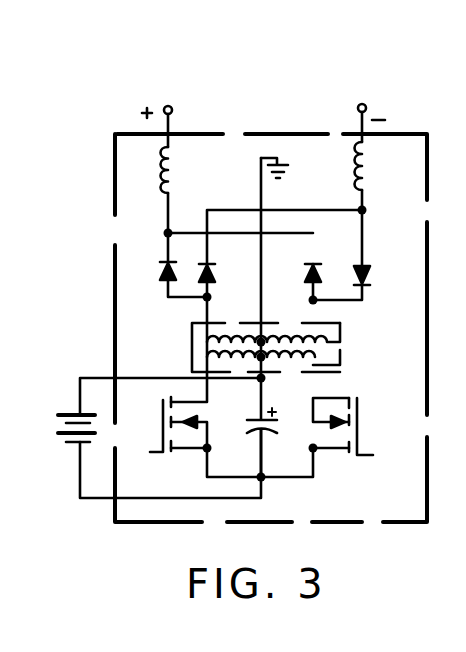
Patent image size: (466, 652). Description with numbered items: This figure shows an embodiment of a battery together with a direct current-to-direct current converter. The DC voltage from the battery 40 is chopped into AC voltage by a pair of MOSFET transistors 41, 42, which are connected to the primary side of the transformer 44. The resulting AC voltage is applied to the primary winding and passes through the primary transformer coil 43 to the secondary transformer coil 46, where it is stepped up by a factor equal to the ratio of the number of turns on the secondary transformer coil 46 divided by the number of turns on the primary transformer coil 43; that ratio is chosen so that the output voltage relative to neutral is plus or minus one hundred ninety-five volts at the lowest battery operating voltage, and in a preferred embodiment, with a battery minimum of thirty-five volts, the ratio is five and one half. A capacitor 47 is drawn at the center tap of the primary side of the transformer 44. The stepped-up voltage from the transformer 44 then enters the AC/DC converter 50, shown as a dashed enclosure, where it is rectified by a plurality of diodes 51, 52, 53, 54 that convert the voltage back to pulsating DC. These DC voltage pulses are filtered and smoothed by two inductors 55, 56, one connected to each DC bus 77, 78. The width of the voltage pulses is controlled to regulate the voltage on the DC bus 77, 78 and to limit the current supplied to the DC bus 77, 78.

The battery 40 is at (52, 448).
The MOSFET transistor 41 is at (160, 420).
The MOSFET transistor 42 is at (377, 423).
The primary transformer coil 43 is at (266, 347).
The transformer 44 is at (343, 358).
The secondary transformer coil 46 is at (318, 342).
The capacitor 47 is at (279, 418).
The AC/DC converter 50 is at (115, 167).
The diode 51 is at (160, 272).
The diode 52 is at (214, 270).
The diode 53 is at (307, 271).
The diode 54 is at (370, 272).
The inductor 55 is at (172, 166).
The inductor 56 is at (366, 173).
The DC bus 77 is at (170, 95).
The DC bus 78 is at (364, 94).